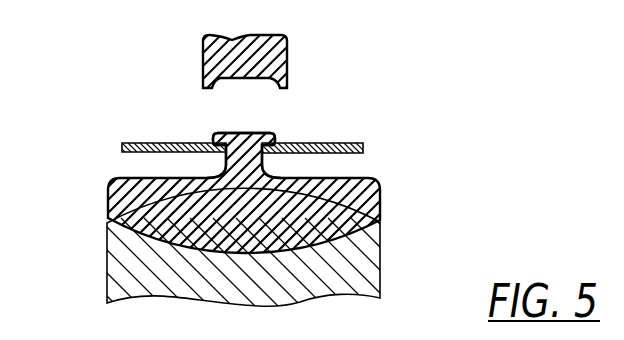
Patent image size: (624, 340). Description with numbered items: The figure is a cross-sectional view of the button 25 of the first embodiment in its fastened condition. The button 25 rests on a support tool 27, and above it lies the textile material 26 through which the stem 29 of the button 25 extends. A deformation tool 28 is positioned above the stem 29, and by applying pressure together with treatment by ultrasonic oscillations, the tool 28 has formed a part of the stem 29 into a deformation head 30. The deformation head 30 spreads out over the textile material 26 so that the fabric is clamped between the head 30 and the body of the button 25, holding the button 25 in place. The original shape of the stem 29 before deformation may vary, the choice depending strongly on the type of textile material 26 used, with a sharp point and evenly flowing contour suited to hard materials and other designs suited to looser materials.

The button 25 is at (368, 190).
The textile material 26 is at (363, 145).
The support tool 27 is at (368, 265).
The deformation tool 28 is at (278, 46).
The stem 29 is at (233, 171).
The deformation head 30 is at (217, 133).